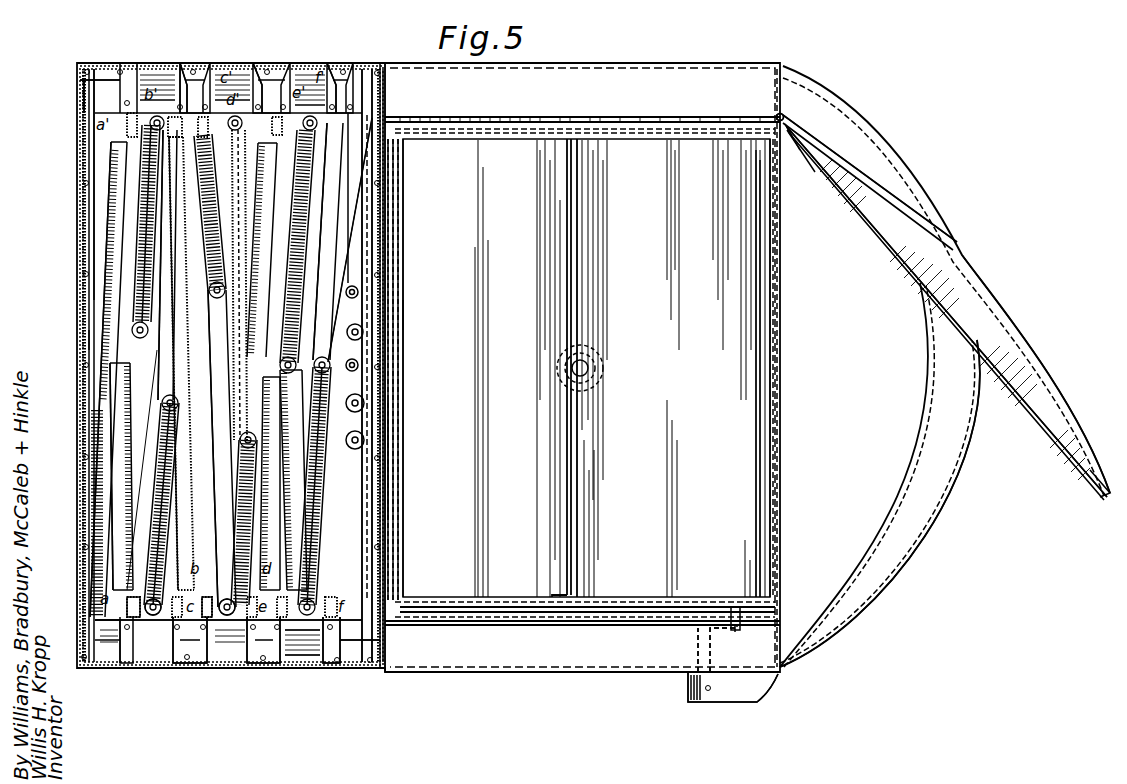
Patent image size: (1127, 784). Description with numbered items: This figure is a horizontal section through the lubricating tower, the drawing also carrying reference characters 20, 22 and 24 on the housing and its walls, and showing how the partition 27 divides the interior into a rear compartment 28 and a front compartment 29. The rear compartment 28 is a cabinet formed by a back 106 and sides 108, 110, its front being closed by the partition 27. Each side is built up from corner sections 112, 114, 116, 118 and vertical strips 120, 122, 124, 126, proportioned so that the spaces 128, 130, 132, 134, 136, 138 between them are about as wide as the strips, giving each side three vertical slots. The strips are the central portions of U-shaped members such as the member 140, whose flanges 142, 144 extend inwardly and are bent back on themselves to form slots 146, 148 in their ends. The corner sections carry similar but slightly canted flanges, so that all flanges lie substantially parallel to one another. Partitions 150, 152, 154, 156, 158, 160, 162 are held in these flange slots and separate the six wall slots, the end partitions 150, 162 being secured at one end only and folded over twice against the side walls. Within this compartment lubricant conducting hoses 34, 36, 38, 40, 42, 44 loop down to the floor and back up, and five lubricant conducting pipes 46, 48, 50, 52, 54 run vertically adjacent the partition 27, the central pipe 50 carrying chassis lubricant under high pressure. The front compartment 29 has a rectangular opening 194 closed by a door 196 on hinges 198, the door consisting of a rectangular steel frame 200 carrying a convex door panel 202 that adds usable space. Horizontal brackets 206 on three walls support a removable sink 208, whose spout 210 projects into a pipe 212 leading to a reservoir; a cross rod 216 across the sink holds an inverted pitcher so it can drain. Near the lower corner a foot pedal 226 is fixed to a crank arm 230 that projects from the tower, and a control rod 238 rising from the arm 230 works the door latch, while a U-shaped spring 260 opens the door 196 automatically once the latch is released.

The housing 20 is at (372, 349).
The side wall 22 is at (118, 150).
The end wall 24 is at (750, 240).
The partition 27 is at (380, 266).
The compartment 28 is at (377, 240).
The compartment 29 is at (525, 321).
The lubricant conducting hose 34 is at (372, 158).
The lubricant conducting hose 36 is at (130, 213).
The lubricant conducting hose 38 is at (135, 255).
The lubricant conducting hose 40 is at (345, 455).
The lubricant conducting hose 42 is at (322, 530).
The lubricant conducting hose 44 is at (165, 418).
The lubricant conducting pipe 46 is at (360, 285).
The lubricant conducting pipe 48 is at (364, 328).
The central pipe 50 is at (360, 370).
The lubricant conducting pipe 52 is at (365, 401).
The lubricant conducting pipe 54 is at (365, 439).
The back 106 is at (100, 340).
The side 108 is at (205, 64).
The side 110 is at (185, 668).
The corner section 112 is at (110, 66).
The corner section 114 is at (343, 66).
The corner section 116 is at (90, 666).
The corner section 118 is at (360, 668).
The vertical strip 120 is at (270, 666).
The vertical strip 122 is at (183, 64).
The vertical strip 124 is at (205, 666).
The vertical strip 126 is at (270, 64).
The slot 128 is at (130, 668).
The slot 130 is at (225, 668).
The slot 132 is at (310, 668).
The slot 134 is at (322, 52).
The slot 136 is at (248, 52).
The slot 138 is at (150, 70).
The U-shaped member 140 is at (195, 658).
The flange 142 is at (146, 625).
The flange 144 is at (220, 625).
The slot 146 is at (152, 619).
The slot 148 is at (225, 619).
The partition 150 is at (150, 360).
The partition 152 is at (170, 372).
The partition 154 is at (185, 386).
The partition 156 is at (215, 437).
The partition 158 is at (372, 176).
The partition 160 is at (380, 195).
The partition 162 is at (350, 307).
The rectangular opening 194 is at (776, 590).
The door 196 is at (1068, 398).
The hinge 198 is at (778, 115).
The rectangular steel frame 200 is at (1085, 478).
The convex door panel 202 is at (1010, 322).
The horizontal bracket 206 is at (392, 520).
The sink 208 is at (740, 385).
The spout 210 is at (597, 377).
The pipe 212 is at (598, 352).
The cross rod 216 is at (578, 303).
The foot pedal 226 is at (757, 702).
The crank arm 230 is at (698, 648).
The control rod 238 is at (738, 607).
The spring 260 is at (792, 150).